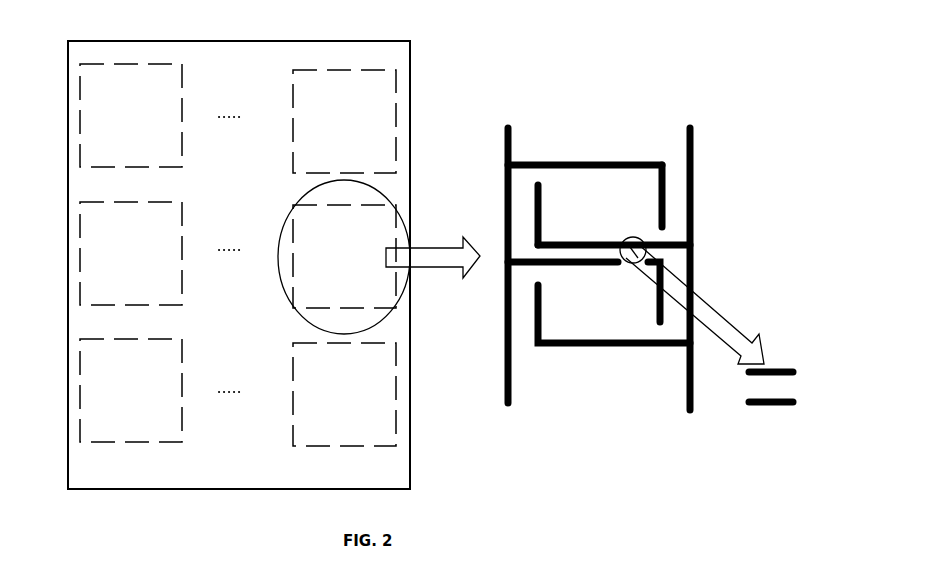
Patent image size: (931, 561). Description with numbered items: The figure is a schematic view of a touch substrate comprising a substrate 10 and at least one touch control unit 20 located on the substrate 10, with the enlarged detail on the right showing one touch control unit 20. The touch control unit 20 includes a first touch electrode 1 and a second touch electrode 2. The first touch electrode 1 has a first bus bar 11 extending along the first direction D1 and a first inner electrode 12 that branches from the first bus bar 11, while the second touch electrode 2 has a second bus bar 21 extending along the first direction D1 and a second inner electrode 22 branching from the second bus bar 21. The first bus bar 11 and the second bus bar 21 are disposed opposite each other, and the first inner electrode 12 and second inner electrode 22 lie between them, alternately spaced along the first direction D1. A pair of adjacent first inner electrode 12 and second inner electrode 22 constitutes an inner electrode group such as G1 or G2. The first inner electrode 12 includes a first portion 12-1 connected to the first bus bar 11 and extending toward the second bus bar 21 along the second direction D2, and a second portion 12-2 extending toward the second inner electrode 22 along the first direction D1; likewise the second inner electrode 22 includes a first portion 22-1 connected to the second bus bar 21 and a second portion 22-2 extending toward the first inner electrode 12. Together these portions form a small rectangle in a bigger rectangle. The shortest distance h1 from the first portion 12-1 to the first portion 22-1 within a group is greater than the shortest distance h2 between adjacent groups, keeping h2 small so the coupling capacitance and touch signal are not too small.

The substrate 10 is at (375, 471).
The touch control unit 20 is at (86, 107).
The first touch electrode 1 is at (501, 411).
The second touch electrode 2 is at (696, 413).
The first bus bar 11 is at (505, 150).
The first inner electrode 12 is at (585, 173).
The first portion of the first inner electrode 12-1 is at (585, 155).
The second portion of the first inner electrode 12-2 is at (653, 196).
The second bus bar 21 is at (695, 150).
The second inner electrode 22 is at (643, 237).
The first portion of the second inner electrode 22-1 is at (614, 231).
The second portion of the second inner electrode 22-2 is at (549, 215).
The inner electrode group G1 is at (704, 209).
The inner electrode group G2 is at (704, 297).
The shortest distance within an inner electrode group h1 is at (608, 339).
The shortest distance between adjacent inner electrode groups h2 is at (777, 398).
The first direction D1 is at (560, 52).
The second direction D2 is at (636, 52).